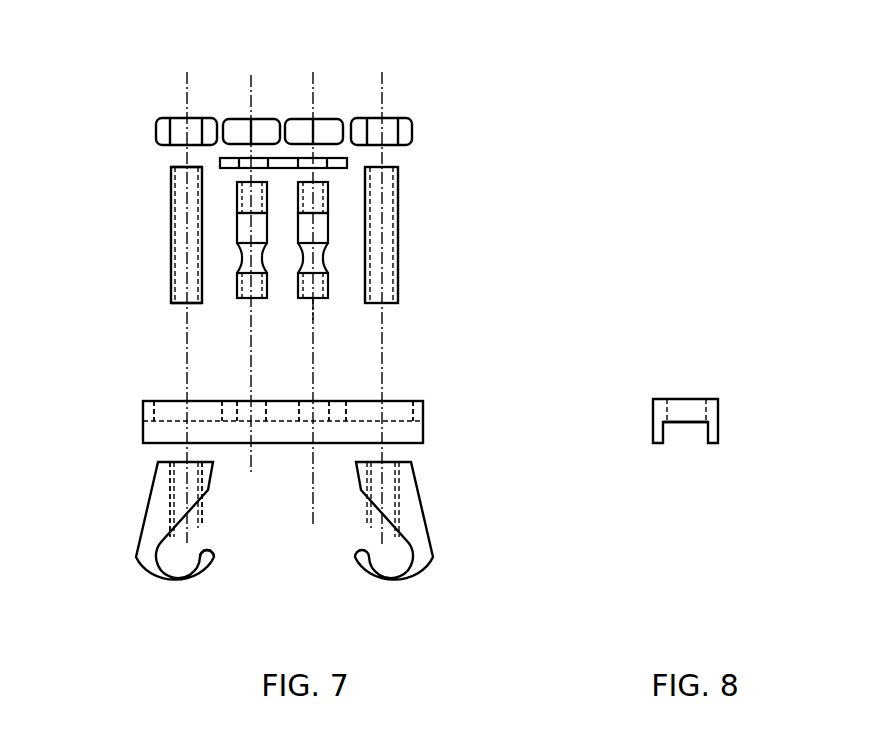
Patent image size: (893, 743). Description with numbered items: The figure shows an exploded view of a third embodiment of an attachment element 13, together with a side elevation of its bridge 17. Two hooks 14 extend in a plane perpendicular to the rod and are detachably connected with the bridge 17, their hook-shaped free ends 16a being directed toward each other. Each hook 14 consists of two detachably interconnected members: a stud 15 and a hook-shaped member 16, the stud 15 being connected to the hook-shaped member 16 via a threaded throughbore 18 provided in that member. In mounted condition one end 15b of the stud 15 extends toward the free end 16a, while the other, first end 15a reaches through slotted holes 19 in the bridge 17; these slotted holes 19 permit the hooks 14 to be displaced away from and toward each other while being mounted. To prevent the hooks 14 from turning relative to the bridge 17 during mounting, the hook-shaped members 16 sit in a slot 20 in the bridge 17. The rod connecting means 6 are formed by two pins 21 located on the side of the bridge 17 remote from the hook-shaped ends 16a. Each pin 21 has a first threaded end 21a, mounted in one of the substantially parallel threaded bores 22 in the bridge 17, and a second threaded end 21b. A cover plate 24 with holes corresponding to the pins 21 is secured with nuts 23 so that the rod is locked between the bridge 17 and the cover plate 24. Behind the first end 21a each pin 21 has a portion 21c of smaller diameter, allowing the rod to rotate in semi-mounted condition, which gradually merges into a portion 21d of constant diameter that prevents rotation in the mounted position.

In FIG. 7, the rod connecting means 6 is at (325, 310).
In FIG. 7, the attachment element 13 is at (448, 117).
In FIG. 7, the hooks 14 is at (162, 318).
In FIG. 7, the stud 15 is at (143, 229).
In FIG. 7, the first end of stud 15a is at (176, 180).
In FIG. 7, the end of stud 15b is at (176, 292).
In FIG. 7, the hook-shaped member 16 is at (134, 540).
In FIG. 7, the hook-shaped free end 16a is at (209, 563).
In FIG. 7, the bridge 17 is at (410, 429).
In FIG. 8, the bridge 17 is at (667, 400).
In FIG. 7, the threaded throughbore 18 is at (185, 490).
In FIG. 7, the slotted holes 19 is at (183, 413).
In FIG. 8, the slot 20 is at (688, 430).
In FIG. 7, the pins 21 is at (359, 281).
In FIG. 7, the first threaded end 21a is at (320, 290).
In FIG. 7, the second threaded end 21b is at (320, 195).
In FIG. 7, the portion of smaller diameter 21c is at (320, 262).
In FIG. 7, the portion of constant diameter 21d is at (317, 225).
In FIG. 7, the threaded bores 22 is at (255, 415).
In FIG. 7, the nuts 23 is at (302, 130).
In FIG. 7, the cover plate 24 is at (347, 163).